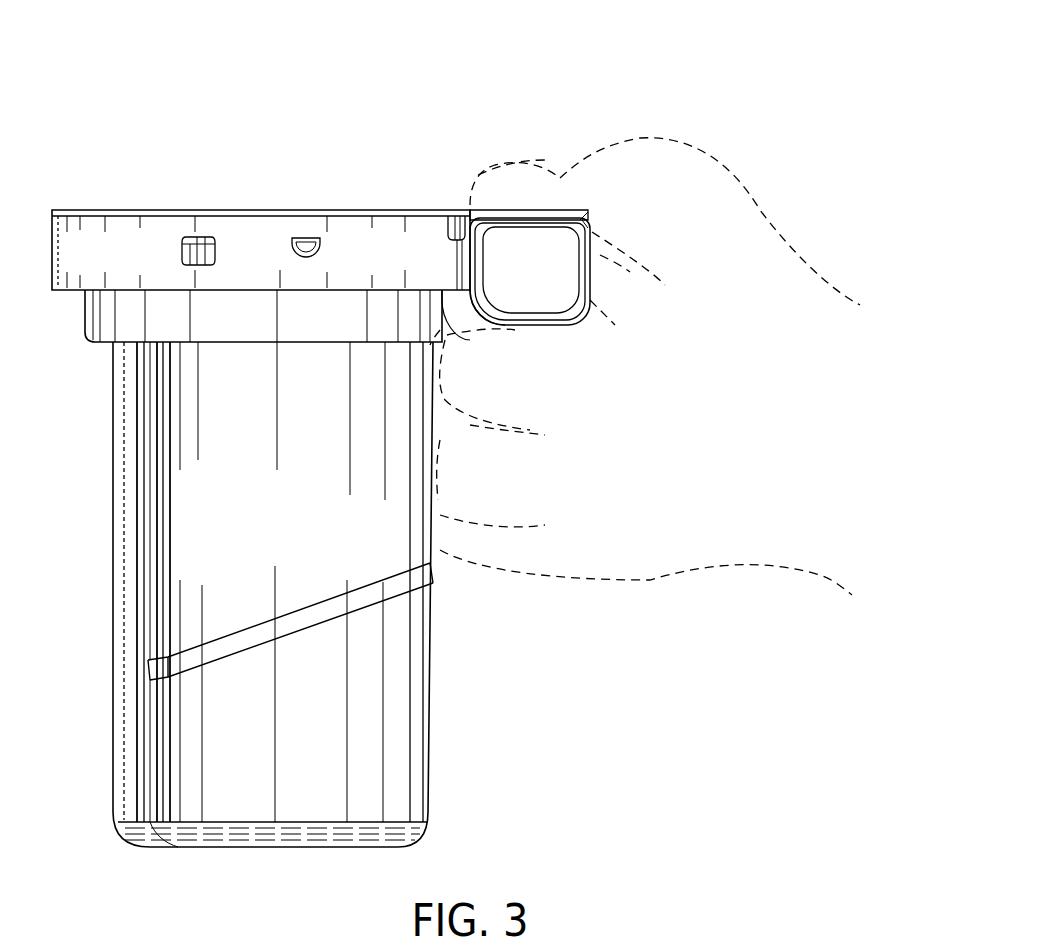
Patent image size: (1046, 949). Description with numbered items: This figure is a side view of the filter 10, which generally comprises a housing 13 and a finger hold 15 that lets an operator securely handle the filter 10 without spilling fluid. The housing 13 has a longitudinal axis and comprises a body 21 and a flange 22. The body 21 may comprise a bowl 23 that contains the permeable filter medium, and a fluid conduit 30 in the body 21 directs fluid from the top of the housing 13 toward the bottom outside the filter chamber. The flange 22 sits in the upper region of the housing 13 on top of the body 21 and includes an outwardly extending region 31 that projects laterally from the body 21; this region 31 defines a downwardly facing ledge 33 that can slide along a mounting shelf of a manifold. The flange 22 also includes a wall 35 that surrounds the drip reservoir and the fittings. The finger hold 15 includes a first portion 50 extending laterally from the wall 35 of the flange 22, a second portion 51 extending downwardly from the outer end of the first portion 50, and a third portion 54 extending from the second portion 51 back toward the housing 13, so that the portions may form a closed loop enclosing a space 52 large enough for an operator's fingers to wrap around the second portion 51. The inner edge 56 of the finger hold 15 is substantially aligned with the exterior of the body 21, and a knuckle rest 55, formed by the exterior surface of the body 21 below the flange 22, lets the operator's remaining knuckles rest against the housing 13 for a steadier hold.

The filter 10 is at (182, 148).
The housing 13 is at (173, 374).
The finger hold 15 is at (592, 228).
The body 21 is at (217, 438).
The flange 22 is at (63, 242).
The bowl 23 is at (180, 497).
The fluid conduit 30 is at (127, 568).
The outwardly extending region 31 is at (119, 230).
The ledge 33 is at (240, 298).
The wall 35 is at (340, 232).
The first portion 50 is at (532, 210).
The second portion 51 is at (540, 283).
The space 52 is at (588, 300).
The third portion 54 is at (517, 323).
The knuckle rest 55 is at (433, 430).
The inner edge 56 is at (450, 210).